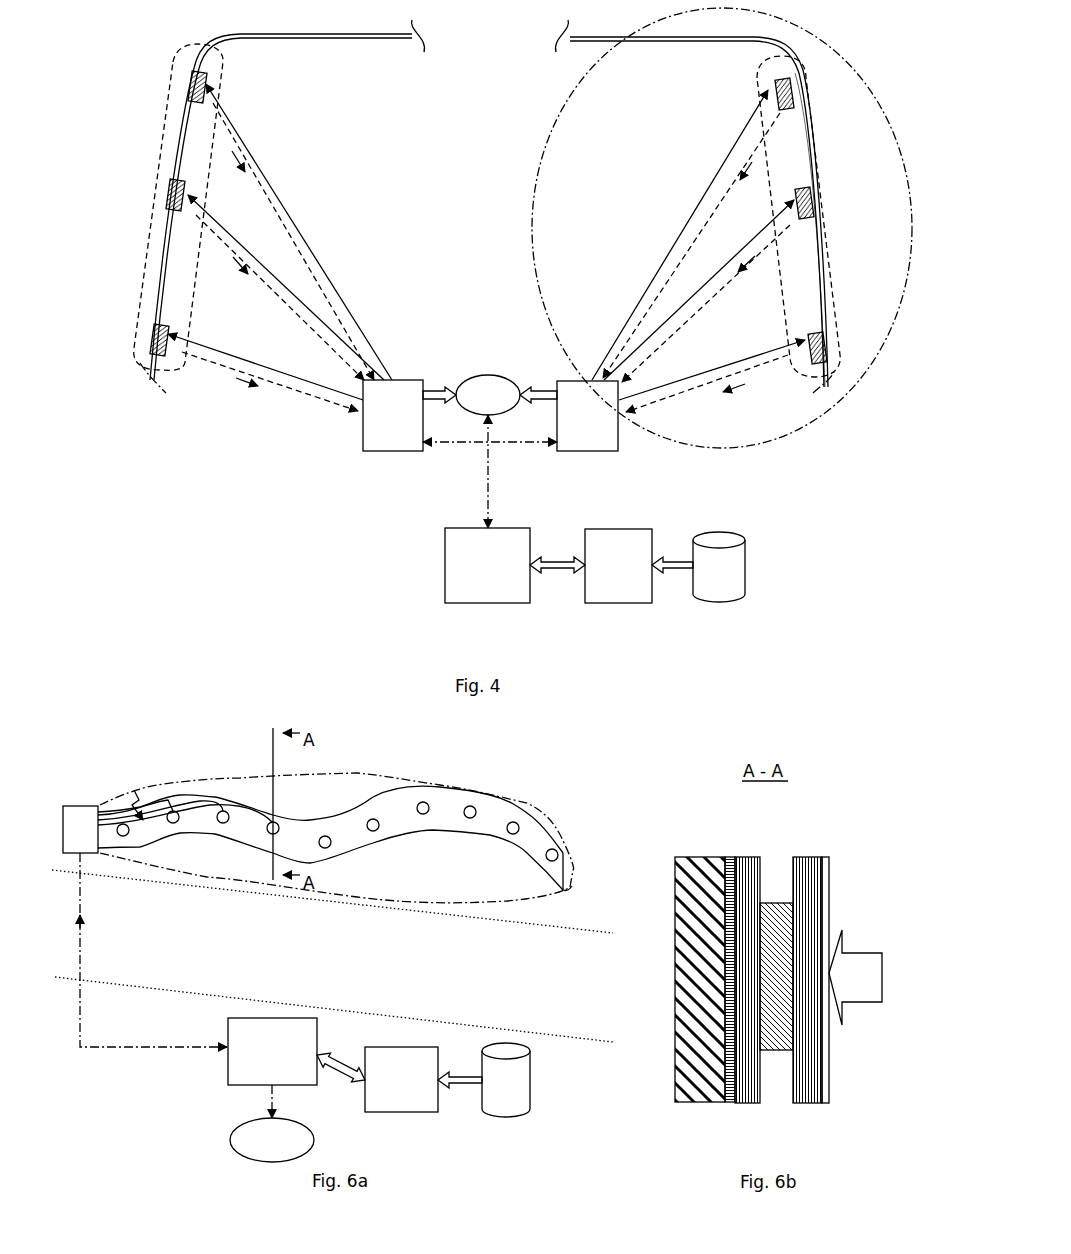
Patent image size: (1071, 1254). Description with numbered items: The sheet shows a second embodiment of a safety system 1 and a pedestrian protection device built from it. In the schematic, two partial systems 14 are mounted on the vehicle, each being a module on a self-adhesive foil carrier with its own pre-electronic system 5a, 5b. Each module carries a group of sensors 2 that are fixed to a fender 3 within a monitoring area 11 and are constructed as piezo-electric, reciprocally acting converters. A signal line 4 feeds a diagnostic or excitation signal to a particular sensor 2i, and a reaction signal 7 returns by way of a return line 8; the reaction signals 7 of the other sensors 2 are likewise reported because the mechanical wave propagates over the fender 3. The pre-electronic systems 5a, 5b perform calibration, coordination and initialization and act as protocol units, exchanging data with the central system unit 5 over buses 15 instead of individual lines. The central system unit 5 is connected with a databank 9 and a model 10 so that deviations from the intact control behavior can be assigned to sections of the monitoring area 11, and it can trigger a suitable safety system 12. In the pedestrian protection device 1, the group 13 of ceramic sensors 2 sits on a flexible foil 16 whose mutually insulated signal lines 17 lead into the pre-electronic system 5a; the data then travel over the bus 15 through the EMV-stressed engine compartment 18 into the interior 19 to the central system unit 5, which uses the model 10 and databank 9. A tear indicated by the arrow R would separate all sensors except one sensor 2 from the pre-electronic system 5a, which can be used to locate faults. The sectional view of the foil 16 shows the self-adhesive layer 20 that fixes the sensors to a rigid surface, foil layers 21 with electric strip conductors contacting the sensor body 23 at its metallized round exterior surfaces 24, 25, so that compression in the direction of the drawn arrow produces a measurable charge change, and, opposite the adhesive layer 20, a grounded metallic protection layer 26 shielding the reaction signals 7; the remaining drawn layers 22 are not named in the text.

In FIG. 4, the safety system 1 is at (90, 62).
In FIG. 6A, the safety system 1 is at (607, 806).
In FIG. 4, the sensor 2 is at (192, 72).
In FIG. 6A, the sensor 2 is at (178, 806).
In FIG. 6B, the sensor 2 is at (788, 854).
In FIG. 4, the particular sensor 2i is at (826, 345).
In FIG. 4, the fender 3 is at (827, 250).
In FIG. 4, the signal line 4 is at (238, 131).
In FIG. 4, the central system unit 5 is at (487, 565).
In FIG. 6A, the central system unit 5 is at (272, 1051).
In FIG. 4, the pre-electronic system 5a is at (393, 415).
In FIG. 6A, the pre-electronic system 5a is at (80, 829).
In FIG. 4, the pre-electronic system 5b is at (587, 416).
In FIG. 4, the reaction signal 7 is at (487, 280).
In FIG. 4, the return line 8 is at (214, 122).
In FIG. 4, the databank 9 is at (698, 567).
In FIG. 6A, the databank 9 is at (484, 1080).
In FIG. 4, the model 10 is at (591, 566).
In FIG. 6A, the model 10 is at (377, 1079).
In FIG. 4, the monitoring area 11 is at (170, 105).
In FIG. 4, the safety system 12 is at (490, 395).
In FIG. 6A, the safety system 12 is at (272, 1123).
In FIG. 4, the group of ceramic sensors 13 is at (122, 226).
In FIG. 6A, the group of ceramic sensors 13 is at (367, 789).
In FIG. 4, the partial system 14 is at (842, 62).
In FIG. 6A, the partial system 14 is at (553, 815).
In FIG. 4, the bus 15 is at (468, 444).
In FIG. 6A, the bus 15 is at (157, 1048).
In FIG. 6A, the flexible foil 16 is at (566, 873).
In FIG. 6B, the flexible foil 16 is at (834, 1126).
In FIG. 6A, the signal lines 17 is at (172, 798).
In FIG. 6A, the engine compartment 18 is at (332, 910).
In FIG. 6A, the interior 19 is at (334, 1009).
In FIG. 6B, the self-adhesive layer 20 is at (700, 1103).
In FIG. 6B, the foil layer 21 is at (729, 857).
In FIG. 6B, the electrode layer 22 is at (750, 857).
In FIG. 6B, the sensor body 23 is at (773, 1052).
In FIG. 6B, the metallized round exterior surface 24 is at (793, 914).
In FIG. 6B, the metallized round exterior surface 25 is at (830, 923).
In FIG. 6B, the metallic protection layer 26 is at (830, 883).
In FIG. 6A, the tear arrow R is at (137, 795).